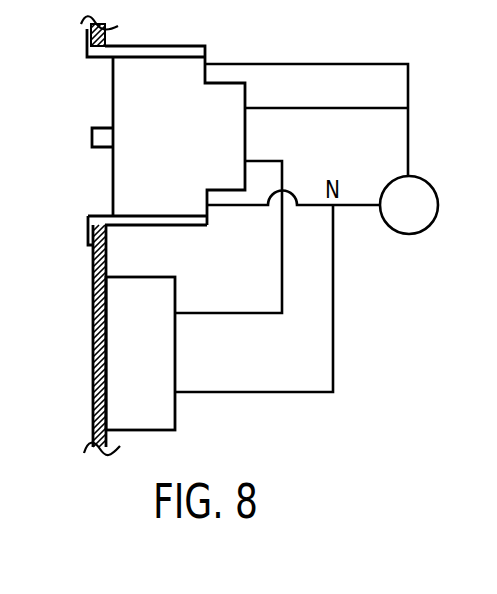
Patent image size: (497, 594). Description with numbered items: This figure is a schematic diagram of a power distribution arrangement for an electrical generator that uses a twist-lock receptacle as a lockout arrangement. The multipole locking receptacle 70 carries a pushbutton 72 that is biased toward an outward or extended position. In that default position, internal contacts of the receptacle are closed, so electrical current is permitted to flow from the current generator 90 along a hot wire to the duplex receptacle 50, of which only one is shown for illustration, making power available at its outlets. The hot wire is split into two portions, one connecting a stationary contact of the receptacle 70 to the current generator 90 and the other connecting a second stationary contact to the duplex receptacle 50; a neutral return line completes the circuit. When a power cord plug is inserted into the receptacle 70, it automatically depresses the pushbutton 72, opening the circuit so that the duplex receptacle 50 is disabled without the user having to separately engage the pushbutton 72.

The multipole locking receptacle 70 is at (70, 70).
The pushbutton 72 is at (92, 137).
The current generator 90 is at (394, 218).
The duplex receptacle 50 is at (80, 357).